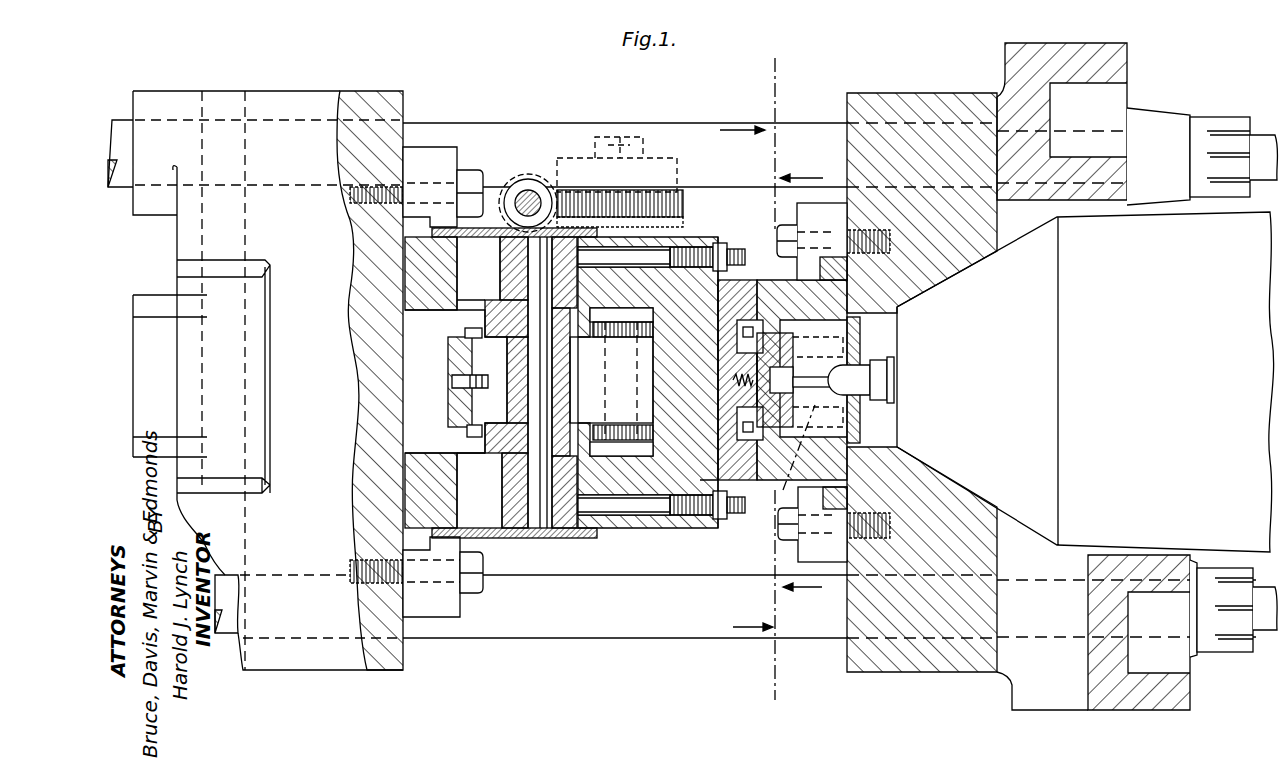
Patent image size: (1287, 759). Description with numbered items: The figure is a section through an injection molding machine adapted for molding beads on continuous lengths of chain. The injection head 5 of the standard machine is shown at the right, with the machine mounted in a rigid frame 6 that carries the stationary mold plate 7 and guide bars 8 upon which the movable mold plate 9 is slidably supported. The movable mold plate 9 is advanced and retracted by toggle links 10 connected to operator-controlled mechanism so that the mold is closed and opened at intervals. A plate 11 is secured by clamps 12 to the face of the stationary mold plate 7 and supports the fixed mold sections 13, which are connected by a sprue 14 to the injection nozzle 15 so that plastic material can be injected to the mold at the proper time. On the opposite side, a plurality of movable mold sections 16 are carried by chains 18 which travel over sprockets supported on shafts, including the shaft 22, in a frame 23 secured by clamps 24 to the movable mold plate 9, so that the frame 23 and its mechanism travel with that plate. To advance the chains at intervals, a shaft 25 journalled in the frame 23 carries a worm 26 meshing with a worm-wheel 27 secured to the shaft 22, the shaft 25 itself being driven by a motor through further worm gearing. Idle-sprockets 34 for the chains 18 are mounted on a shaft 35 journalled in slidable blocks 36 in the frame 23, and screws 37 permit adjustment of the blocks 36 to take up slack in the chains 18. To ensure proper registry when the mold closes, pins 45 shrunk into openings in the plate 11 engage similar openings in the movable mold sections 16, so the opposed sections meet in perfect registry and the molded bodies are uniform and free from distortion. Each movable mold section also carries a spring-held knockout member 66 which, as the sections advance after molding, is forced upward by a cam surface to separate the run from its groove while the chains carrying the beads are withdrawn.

The injection head 5 is at (1033, 520).
The rigid frame 6 is at (1021, 47).
The stationary mold plate 7 is at (873, 98).
The guide bars 8 is at (687, 130).
The movable mold plate 9 is at (380, 103).
The toggle links 10 is at (148, 293).
The plate 11 is at (799, 379).
The clamps 12 is at (746, 378).
The fixed mold sections 13 is at (788, 281).
The sprue 14 is at (850, 343).
The injection nozzle 15 is at (858, 380).
The movable mold sections 16 is at (450, 416).
The chains 18 is at (475, 338).
The shaft 22 is at (622, 133).
The frame 23 is at (425, 309).
The clamps 24 is at (438, 155).
The shaft 25 is at (524, 190).
The worm 26 is at (503, 192).
The worm-wheel 27 is at (681, 200).
The idle-sprockets 34 is at (502, 306).
The shaft 35 is at (534, 271).
The slidable blocks 36 is at (510, 252).
The screws 37 is at (676, 242).
The pins 45 is at (790, 490).
The knockout member 66 is at (451, 381).